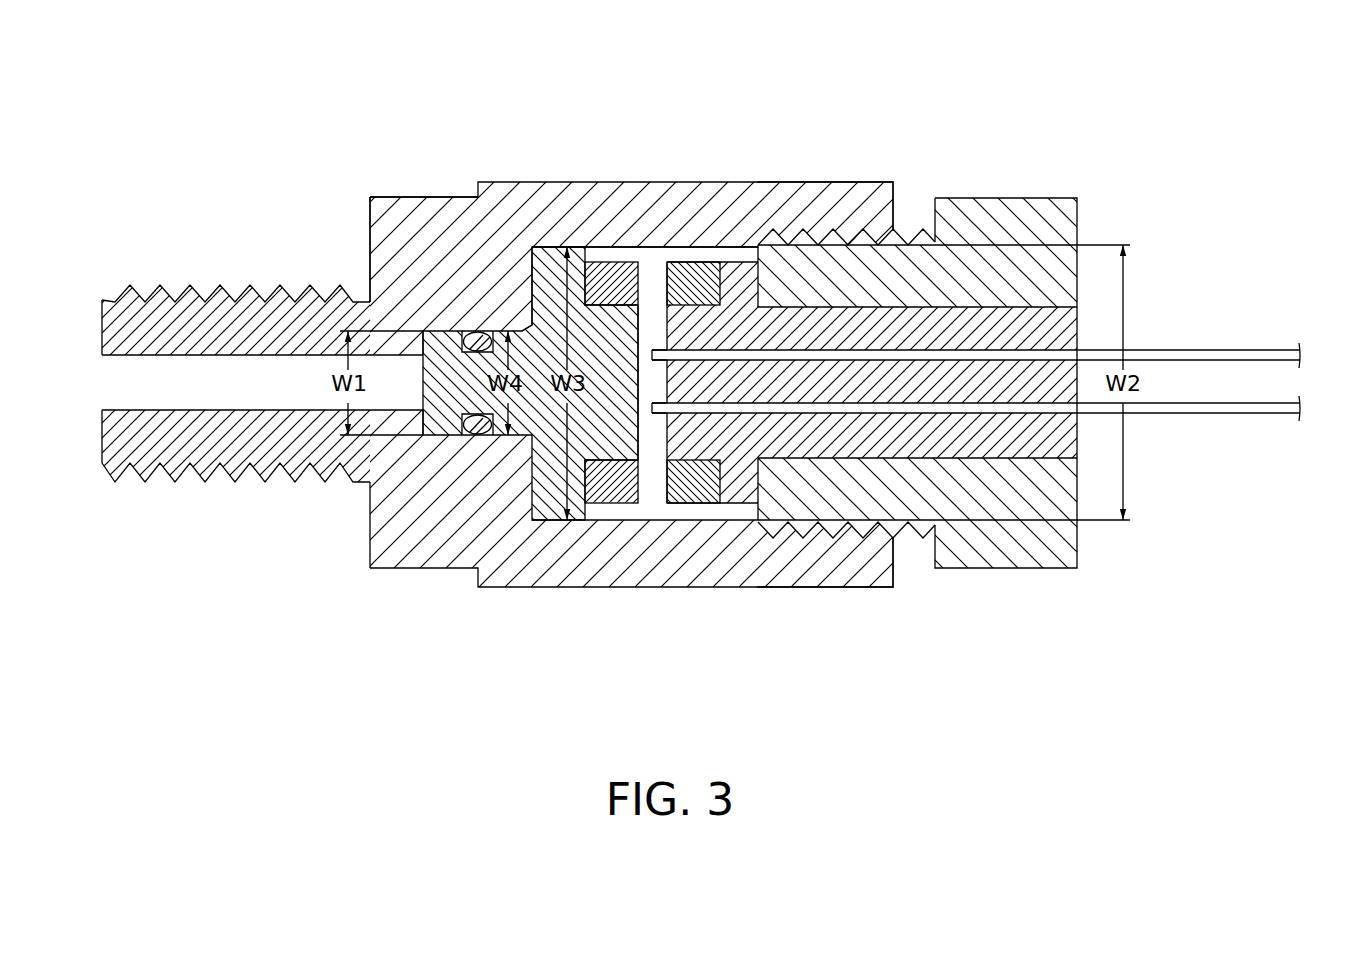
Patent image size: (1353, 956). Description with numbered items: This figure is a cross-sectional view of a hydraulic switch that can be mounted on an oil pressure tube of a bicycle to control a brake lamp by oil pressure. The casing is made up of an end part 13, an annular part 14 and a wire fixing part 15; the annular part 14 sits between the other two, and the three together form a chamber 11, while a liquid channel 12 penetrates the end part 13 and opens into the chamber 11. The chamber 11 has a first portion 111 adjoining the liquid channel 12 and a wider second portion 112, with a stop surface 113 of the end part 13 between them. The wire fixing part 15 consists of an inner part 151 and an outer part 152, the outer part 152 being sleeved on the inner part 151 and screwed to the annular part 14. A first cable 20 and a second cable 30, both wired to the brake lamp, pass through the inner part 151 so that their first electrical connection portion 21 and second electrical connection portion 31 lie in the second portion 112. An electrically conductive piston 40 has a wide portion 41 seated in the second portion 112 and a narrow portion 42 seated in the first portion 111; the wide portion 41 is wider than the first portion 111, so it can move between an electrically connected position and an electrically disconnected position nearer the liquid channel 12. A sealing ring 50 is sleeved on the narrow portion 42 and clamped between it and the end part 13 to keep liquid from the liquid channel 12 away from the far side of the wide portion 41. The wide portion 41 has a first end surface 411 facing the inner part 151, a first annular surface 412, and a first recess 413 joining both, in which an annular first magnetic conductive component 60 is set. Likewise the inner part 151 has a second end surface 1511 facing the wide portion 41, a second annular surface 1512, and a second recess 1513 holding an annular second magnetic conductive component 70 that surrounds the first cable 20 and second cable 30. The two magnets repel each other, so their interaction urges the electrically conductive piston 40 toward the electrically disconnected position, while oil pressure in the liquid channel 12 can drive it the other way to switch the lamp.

The chamber 11 is at (522, 100).
The first portion 111 is at (558, 245).
The second portion 112 is at (647, 251).
The stop surface 113 is at (539, 280).
The liquid channel 12 is at (276, 387).
The end part 13 is at (462, 235).
The annular part 14 is at (762, 192).
The wire fixing part 15 is at (857, 376).
The inner part 151 is at (980, 323).
The outer part 152 is at (1027, 218).
The second end surface 1511 is at (654, 394).
The second annular surface 1512 is at (750, 523).
The second recess 1513 is at (694, 288).
The first cable 20 is at (976, 249).
The first electrical connection portion 21 is at (656, 348).
The second cable 30 is at (976, 518).
The second electrical connection portion 31 is at (653, 410).
The electrically conductive piston 40 is at (536, 480).
The wide portion 41 is at (567, 459).
The first end surface 411 is at (644, 447).
The first annular surface 412 is at (553, 528).
The first recess 413 is at (616, 517).
The narrow portion 42 is at (516, 349).
The sealing ring 50 is at (470, 322).
The first magnetic conductive component 60 is at (612, 271).
The second magnetic conductive component 70 is at (695, 488).